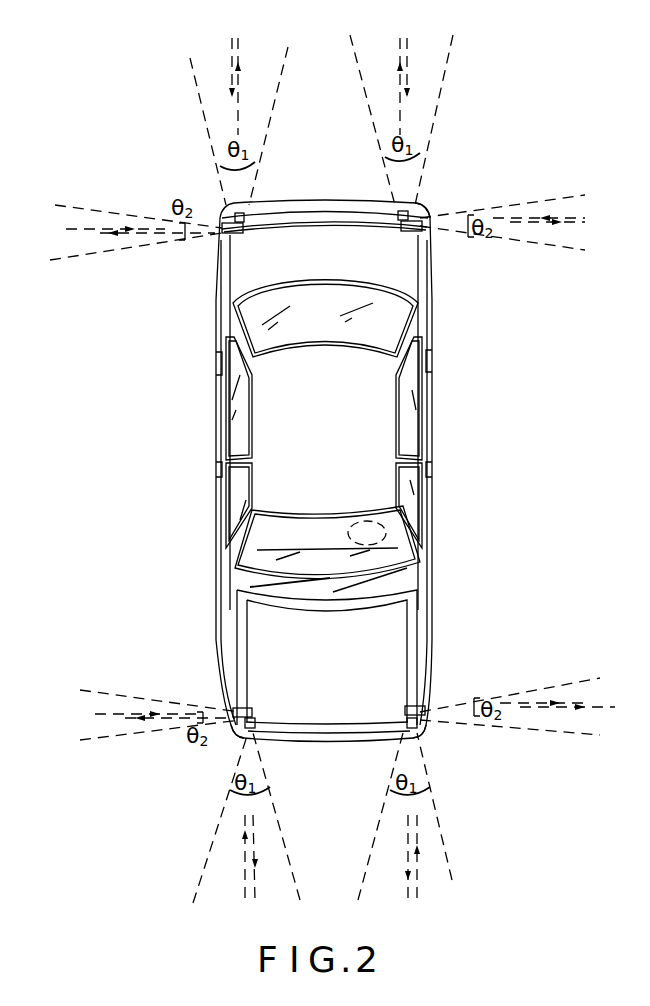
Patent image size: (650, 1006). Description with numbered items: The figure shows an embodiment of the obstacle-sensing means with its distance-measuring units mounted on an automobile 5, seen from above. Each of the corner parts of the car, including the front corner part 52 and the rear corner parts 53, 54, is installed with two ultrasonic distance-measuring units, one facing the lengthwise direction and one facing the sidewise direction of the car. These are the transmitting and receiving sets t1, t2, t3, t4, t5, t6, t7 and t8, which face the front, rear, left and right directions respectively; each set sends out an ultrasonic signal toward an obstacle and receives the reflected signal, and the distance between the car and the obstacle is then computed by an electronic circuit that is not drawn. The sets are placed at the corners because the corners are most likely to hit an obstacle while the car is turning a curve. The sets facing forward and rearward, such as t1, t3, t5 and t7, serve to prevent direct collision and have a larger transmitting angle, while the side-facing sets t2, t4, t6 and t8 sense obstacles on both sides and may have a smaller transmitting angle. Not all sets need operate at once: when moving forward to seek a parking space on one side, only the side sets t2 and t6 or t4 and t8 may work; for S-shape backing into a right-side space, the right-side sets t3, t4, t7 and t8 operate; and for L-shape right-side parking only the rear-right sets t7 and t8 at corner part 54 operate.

The automobile 5 is at (216, 446).
The corner part 52 is at (420, 208).
The corner part 53 is at (243, 736).
The corner part 54 is at (418, 736).
The transmitting and receiving set t1 is at (244, 213).
The transmitting and receiving set t2 is at (221, 236).
The transmitting and receiving set t3 is at (400, 212).
The transmitting and receiving set t4 is at (423, 228).
The transmitting and receiving set t5 is at (253, 733).
The transmitting and receiving set t6 is at (233, 712).
The transmitting and receiving set t7 is at (407, 733).
The transmitting and receiving set t8 is at (425, 710).